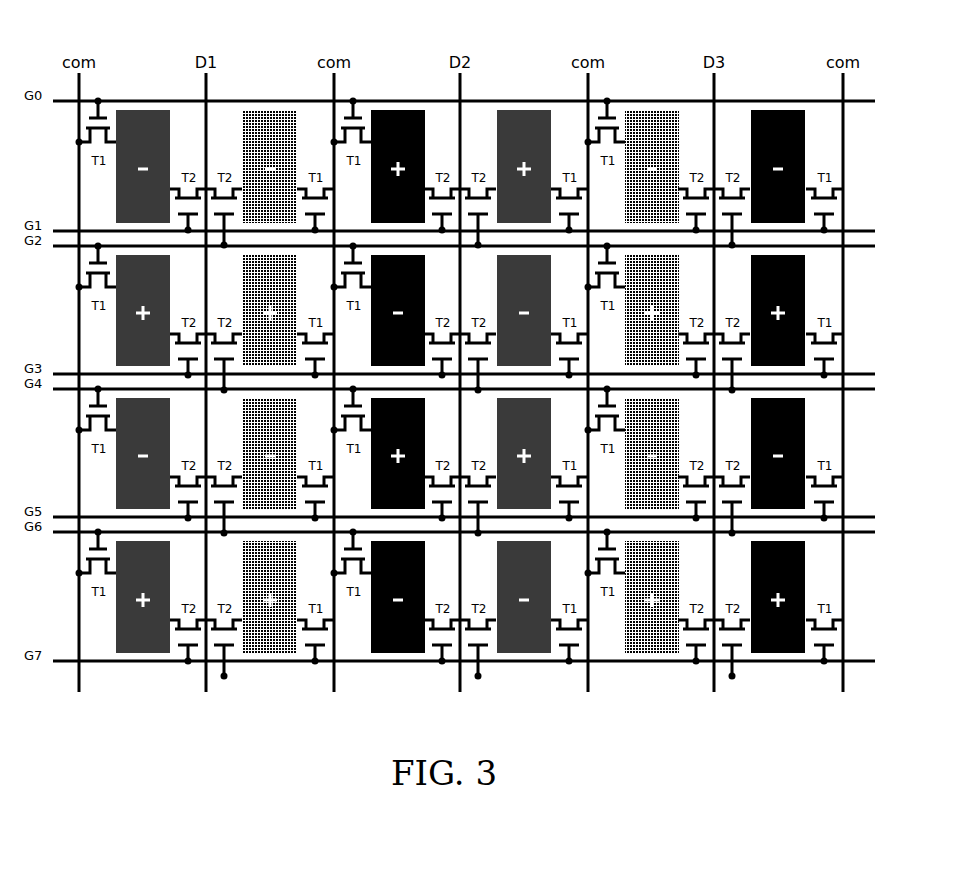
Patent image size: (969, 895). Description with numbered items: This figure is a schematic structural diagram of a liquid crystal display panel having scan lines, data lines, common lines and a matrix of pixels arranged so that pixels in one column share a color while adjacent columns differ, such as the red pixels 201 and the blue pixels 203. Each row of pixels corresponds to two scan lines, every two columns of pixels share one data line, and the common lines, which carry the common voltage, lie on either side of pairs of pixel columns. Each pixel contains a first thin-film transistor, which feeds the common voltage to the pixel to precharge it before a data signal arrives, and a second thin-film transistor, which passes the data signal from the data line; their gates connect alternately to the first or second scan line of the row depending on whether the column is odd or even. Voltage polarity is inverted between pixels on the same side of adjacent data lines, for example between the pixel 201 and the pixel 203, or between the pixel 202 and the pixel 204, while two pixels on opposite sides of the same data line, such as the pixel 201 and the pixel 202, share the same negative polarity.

The red pixel 201 is at (158, 105).
The pixel 202 is at (280, 105).
The blue pixel 203 is at (402, 105).
The pixel 204 is at (527, 105).